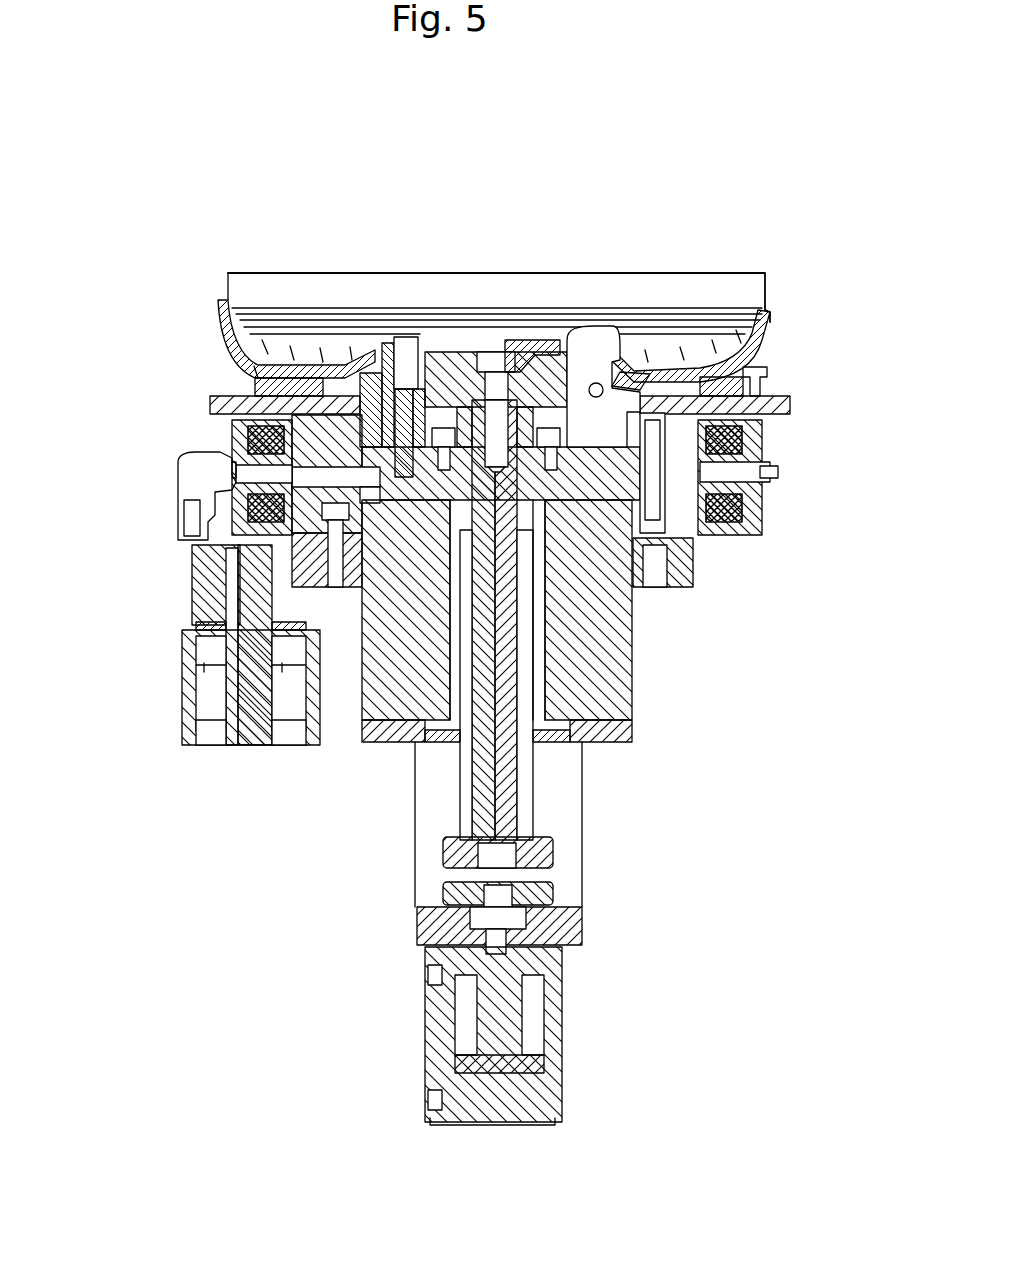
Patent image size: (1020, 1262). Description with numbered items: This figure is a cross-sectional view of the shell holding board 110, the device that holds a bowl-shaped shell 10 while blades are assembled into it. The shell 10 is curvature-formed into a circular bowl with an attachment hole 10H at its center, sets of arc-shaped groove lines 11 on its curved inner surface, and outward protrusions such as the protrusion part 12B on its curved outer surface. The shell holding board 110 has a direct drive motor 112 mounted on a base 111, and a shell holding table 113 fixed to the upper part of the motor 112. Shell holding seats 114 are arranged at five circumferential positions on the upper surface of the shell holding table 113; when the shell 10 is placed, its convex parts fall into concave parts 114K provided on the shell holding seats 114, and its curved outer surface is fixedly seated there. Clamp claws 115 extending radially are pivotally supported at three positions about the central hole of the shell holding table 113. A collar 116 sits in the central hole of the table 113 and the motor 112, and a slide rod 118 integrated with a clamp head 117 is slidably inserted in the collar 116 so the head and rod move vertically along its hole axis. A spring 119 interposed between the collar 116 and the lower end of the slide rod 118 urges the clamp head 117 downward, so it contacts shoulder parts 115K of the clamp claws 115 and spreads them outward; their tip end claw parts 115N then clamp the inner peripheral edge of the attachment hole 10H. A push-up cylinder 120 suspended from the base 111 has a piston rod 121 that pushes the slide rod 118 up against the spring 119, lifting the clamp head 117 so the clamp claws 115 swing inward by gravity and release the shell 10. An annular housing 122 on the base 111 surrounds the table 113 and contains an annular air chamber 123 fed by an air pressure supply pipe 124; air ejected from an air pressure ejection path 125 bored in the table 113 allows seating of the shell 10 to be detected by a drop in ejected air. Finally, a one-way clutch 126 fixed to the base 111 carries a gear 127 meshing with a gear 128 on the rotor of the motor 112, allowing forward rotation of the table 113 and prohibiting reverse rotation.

The shell holding board 110 is at (182, 228).
The shell 10 is at (734, 270).
The attachment hole 10H is at (598, 380).
The groove lines 11 is at (700, 332).
The protrusion part 12B is at (256, 376).
The base 111 is at (625, 731).
The direct drive motor 112 is at (625, 658).
The shell holding table 113 is at (425, 440).
The shell holding seats 114 is at (256, 396).
The concave parts 114K is at (290, 372).
The clamp claws 115 is at (575, 400).
The shoulder parts 115K is at (520, 352).
The tip end claw parts 115N is at (652, 380).
The collar 116 is at (530, 576).
The clamp head 117 is at (485, 372).
The slide rod 118 is at (443, 850).
The spring 119 is at (478, 767).
The push-up cylinder 120 is at (432, 1026).
The piston rod 121 is at (443, 895).
The annular housing 122 is at (232, 440).
The annular air chamber 123 is at (232, 468).
The air pressure supply pipe 124 is at (186, 481).
The air pressure ejection path 125 is at (398, 372).
The one-way clutch 126 is at (188, 626).
The gear 127 is at (192, 561).
The gear 128 is at (700, 556).